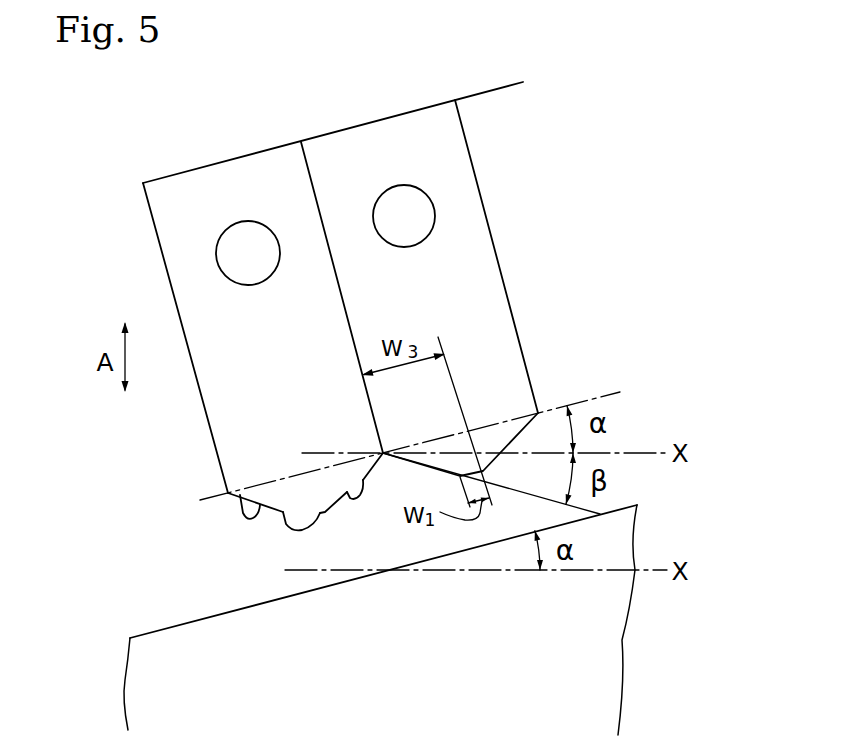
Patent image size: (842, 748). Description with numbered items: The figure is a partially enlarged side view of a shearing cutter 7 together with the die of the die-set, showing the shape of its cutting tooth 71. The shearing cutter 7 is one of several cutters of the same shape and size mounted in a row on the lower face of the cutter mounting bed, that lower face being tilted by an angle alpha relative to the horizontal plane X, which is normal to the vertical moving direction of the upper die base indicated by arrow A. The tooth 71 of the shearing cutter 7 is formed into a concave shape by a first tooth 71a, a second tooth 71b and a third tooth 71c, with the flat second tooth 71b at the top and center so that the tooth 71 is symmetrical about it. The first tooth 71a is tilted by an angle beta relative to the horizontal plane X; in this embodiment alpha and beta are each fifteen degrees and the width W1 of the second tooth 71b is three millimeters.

The shearing cutter 7 is at (146, 228).
The tooth 71 is at (290, 417).
The first tooth 71a is at (241, 496).
The second tooth 71b is at (283, 508).
The third tooth 71c is at (337, 433).